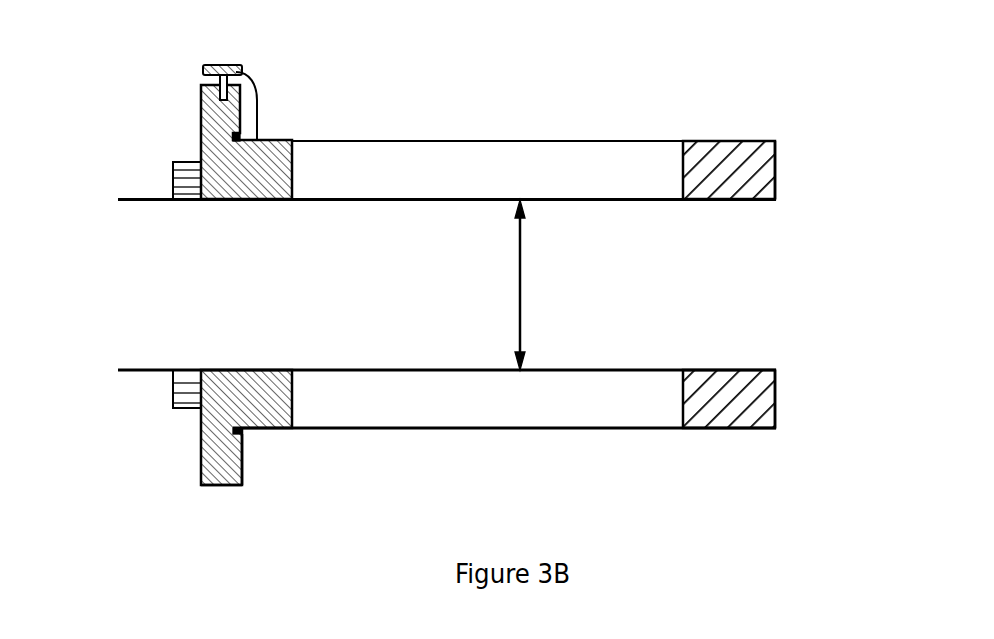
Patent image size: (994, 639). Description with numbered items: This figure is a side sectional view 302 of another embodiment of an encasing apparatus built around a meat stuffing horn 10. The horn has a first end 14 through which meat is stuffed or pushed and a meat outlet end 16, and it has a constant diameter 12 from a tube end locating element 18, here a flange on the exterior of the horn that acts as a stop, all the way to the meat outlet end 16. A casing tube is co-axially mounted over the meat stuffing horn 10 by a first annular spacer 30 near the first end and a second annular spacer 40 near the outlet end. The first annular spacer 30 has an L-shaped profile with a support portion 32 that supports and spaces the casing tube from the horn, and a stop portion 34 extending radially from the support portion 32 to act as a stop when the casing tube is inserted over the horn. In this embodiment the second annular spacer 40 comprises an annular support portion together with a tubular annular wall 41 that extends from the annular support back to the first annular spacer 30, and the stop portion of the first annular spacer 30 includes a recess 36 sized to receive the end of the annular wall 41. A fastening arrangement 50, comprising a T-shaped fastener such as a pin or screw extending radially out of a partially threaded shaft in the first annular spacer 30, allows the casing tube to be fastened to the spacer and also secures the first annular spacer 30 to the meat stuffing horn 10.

The side sectional view 302 is at (201, 105).
The first annular spacer 30 is at (196, 118).
The fastening arrangement 50 is at (270, 87).
The tube end locating element 18 is at (171, 170).
The meat stuffing horn 10 is at (408, 193).
The annular wall 41 is at (642, 131).
The second annular spacer 40 is at (780, 168).
The first end 14 is at (114, 285).
The meat outlet end 16 is at (787, 285).
The diameter 12 is at (534, 285).
The support portion 32 is at (303, 392).
The recess 36 is at (245, 436).
The stop portion 34 is at (245, 478).